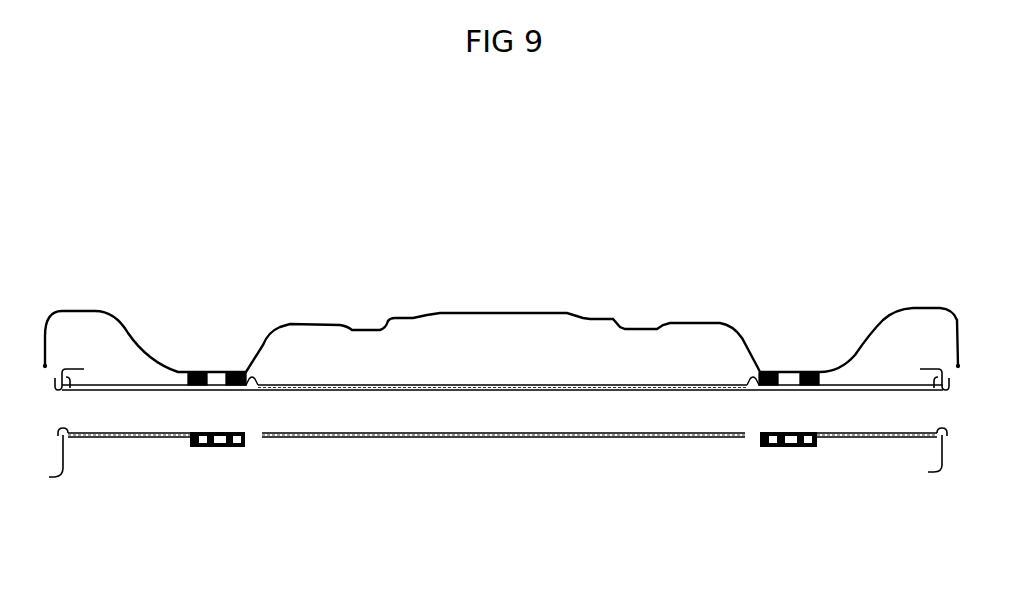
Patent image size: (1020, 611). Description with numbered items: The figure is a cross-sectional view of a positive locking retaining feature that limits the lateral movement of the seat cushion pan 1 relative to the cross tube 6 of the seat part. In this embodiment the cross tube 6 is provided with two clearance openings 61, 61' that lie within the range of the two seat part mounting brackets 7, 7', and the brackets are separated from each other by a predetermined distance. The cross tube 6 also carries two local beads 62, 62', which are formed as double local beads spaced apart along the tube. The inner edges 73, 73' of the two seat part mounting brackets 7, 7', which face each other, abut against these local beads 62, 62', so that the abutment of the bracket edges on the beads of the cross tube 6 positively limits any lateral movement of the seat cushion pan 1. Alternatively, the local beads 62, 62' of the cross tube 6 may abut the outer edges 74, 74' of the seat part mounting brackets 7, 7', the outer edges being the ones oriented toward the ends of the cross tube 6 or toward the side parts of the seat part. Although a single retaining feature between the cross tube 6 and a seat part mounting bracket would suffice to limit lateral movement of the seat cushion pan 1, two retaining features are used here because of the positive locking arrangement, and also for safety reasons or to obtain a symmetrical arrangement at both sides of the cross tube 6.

The seat cushion pan 1 is at (536, 313).
The cross tube 6 is at (520, 412).
The clearance opening 61 is at (189, 495).
The clearance opening 61' is at (819, 502).
The local bead 62 is at (210, 308).
The local bead 62' is at (787, 303).
The seat part mounting bracket 7 is at (188, 497).
The seat part mounting bracket 7' is at (813, 504).
The inner edge 73 is at (244, 297).
The inner edge 73' is at (738, 298).
The outer edge 74 is at (150, 289).
The outer edge 74' is at (854, 303).